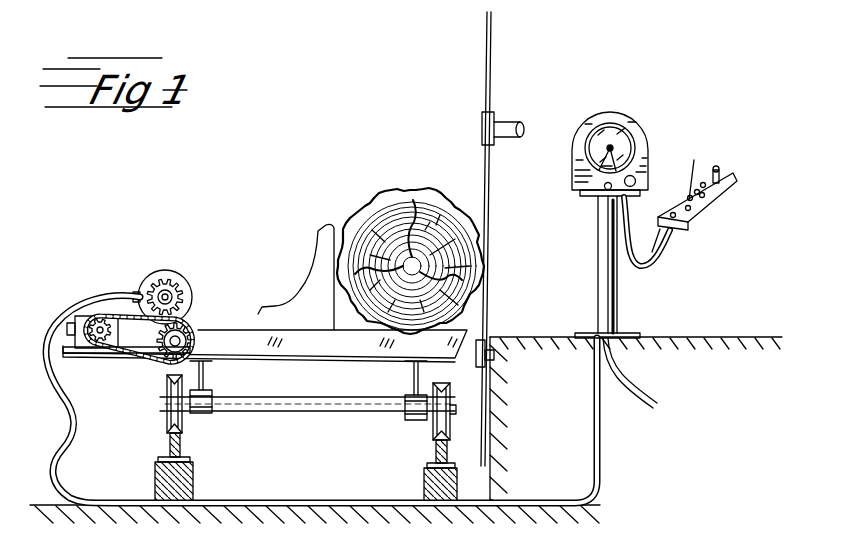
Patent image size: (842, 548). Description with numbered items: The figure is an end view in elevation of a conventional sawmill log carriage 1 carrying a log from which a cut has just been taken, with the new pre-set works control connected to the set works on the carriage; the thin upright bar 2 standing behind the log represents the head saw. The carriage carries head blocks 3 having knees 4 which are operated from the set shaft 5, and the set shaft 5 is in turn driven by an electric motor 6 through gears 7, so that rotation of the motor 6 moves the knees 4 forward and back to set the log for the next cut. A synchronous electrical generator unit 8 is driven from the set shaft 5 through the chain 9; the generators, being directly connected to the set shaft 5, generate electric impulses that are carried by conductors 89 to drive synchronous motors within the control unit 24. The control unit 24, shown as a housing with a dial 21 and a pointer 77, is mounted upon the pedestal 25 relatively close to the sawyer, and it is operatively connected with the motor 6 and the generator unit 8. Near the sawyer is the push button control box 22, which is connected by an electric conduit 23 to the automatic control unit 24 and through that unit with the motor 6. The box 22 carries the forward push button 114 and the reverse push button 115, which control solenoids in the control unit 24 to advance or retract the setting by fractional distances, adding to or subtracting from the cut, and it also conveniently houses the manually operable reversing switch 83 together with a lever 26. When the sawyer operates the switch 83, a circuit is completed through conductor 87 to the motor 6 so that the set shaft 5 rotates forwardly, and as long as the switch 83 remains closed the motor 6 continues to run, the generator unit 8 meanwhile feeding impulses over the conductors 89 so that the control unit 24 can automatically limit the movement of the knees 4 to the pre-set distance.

The table 1 is at (330, 362).
The vertical bar 2 is at (511, 85).
The head block 3 is at (390, 352).
The knee 4 is at (323, 277).
The set shaft 5 is at (202, 326).
The electric motor 6 is at (177, 281).
The gears 7 is at (198, 322).
The synchronous electrical generator unit 8 is at (86, 318).
The chain 9 is at (148, 352).
The gauge dial 21 is at (595, 155).
The push button control box 22 is at (697, 224).
The electric conduit 23 is at (641, 268).
The control unit 24 is at (637, 140).
The pedestal 25 is at (602, 238).
The lever 26 is at (695, 171).
The pointer 77 is at (628, 168).
The reversing switch 83 is at (718, 172).
The conductor 87 is at (601, 422).
The conductors 89 is at (593, 422).
The forward push button 114 is at (667, 210).
The reverse push button 115 is at (712, 198).